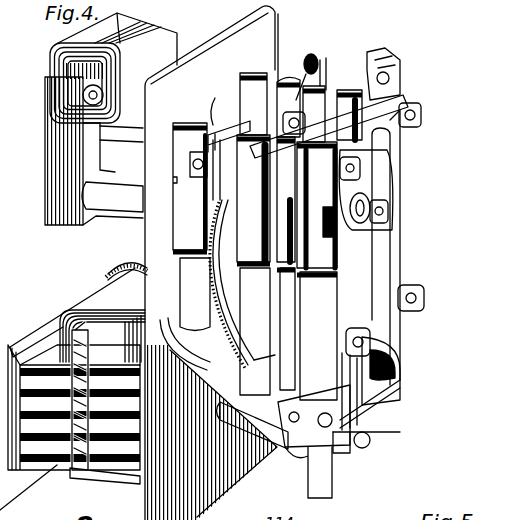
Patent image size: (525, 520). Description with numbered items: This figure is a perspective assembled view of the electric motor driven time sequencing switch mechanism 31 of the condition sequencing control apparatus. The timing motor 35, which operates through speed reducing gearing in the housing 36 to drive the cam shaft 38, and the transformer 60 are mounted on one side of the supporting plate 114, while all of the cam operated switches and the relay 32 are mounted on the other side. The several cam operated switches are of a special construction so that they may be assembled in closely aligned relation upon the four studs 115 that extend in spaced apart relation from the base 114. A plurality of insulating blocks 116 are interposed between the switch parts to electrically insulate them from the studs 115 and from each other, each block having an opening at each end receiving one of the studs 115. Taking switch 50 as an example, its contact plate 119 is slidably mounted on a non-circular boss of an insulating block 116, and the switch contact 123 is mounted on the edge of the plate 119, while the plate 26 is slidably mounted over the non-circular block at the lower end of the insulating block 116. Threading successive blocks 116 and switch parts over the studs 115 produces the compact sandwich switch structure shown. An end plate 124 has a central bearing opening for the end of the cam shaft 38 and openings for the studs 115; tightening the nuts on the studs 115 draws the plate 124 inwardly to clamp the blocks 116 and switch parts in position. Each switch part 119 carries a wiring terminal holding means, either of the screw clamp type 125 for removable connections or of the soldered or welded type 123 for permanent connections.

The electric motor driven time sequencing switch mechanism 31 is at (219, 20).
The electric timing motor 35 is at (46, 161).
The housing 36 is at (127, 225).
The transformer 60 is at (50, 320).
The plate 26 is at (222, 352).
The supporting plate 114 is at (279, 15).
The insulating blocks 116 is at (278, 97).
The contact plate 119 is at (268, 74).
The switch contact 123 is at (313, 58).
The switch 50 is at (338, 80).
The screw clamp type wiring terminal holding means 125 is at (388, 62).
The studs 115 is at (423, 114).
The cam shaft 38 is at (388, 213).
The end plate 124 is at (402, 238).
The relay 32 is at (400, 378).